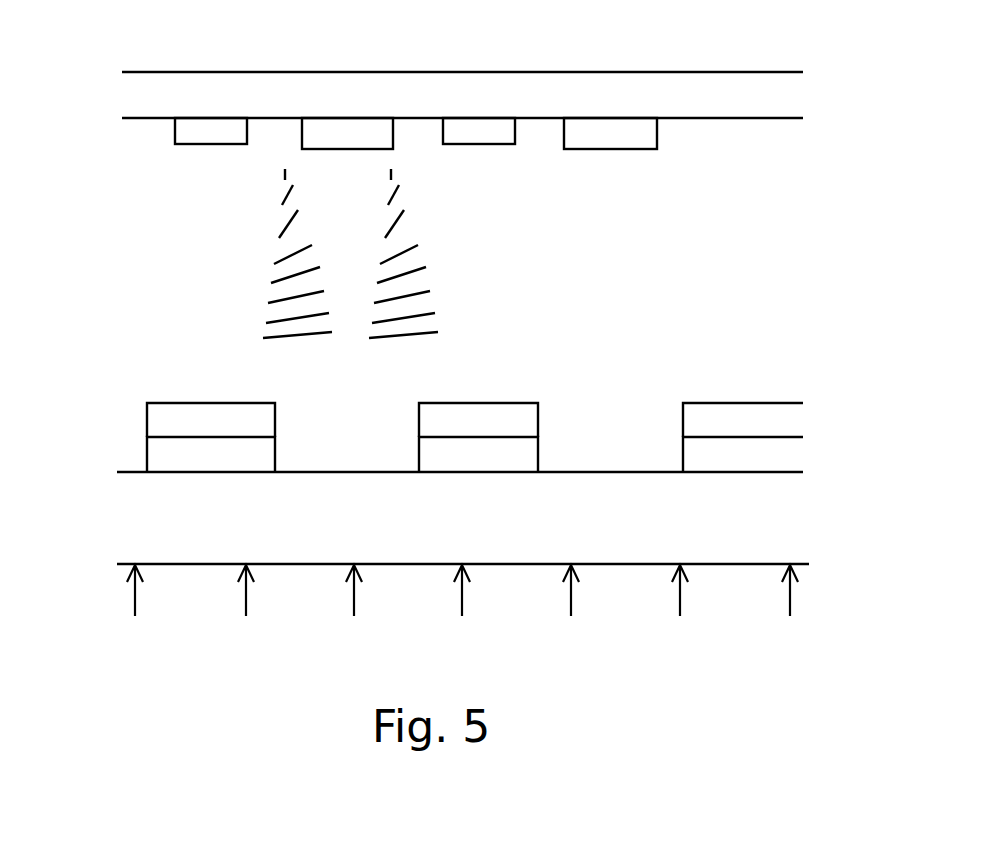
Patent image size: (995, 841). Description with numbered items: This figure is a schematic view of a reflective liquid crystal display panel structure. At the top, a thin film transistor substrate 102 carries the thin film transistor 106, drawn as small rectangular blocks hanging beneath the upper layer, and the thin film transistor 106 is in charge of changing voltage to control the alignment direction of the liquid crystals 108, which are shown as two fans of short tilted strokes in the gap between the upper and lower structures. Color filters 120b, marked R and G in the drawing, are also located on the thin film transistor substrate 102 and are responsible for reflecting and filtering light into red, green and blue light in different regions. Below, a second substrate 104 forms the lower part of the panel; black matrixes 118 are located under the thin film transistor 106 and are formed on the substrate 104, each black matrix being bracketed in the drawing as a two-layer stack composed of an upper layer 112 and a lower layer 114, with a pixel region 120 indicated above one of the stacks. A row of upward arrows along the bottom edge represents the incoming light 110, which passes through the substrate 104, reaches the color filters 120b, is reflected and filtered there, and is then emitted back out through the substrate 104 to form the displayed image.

The thin film transistor substrate 102 is at (137, 94).
The substrate 104 is at (137, 510).
The thin film transistor 106 is at (185, 133).
The liquid crystals 108 is at (435, 270).
The backlight 110 is at (760, 630).
The first layer of pixel electrode stack 112 is at (160, 418).
The second layer of pixel electrode stack 114 is at (160, 453).
The black matrixes 118 is at (283, 403).
The pixel region 120 is at (538, 382).
The color filters 120b is at (317, 133).